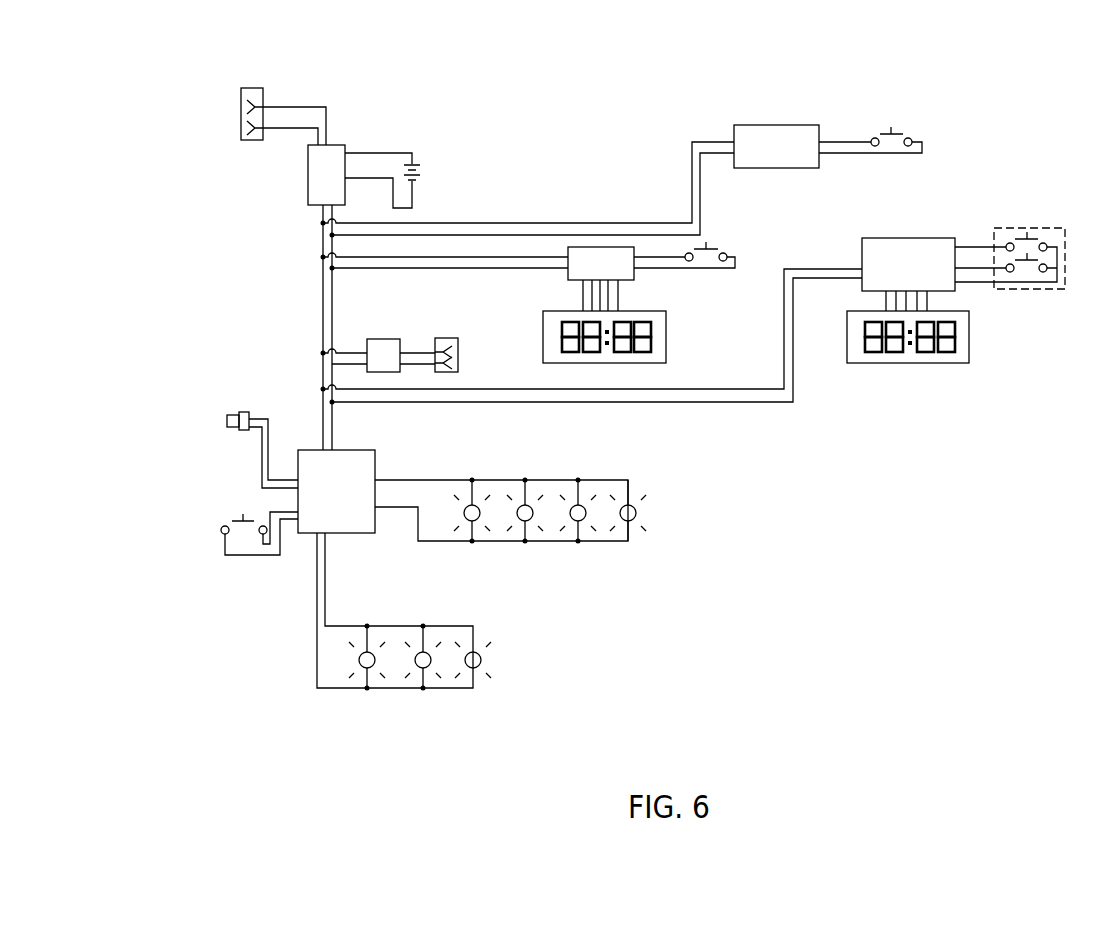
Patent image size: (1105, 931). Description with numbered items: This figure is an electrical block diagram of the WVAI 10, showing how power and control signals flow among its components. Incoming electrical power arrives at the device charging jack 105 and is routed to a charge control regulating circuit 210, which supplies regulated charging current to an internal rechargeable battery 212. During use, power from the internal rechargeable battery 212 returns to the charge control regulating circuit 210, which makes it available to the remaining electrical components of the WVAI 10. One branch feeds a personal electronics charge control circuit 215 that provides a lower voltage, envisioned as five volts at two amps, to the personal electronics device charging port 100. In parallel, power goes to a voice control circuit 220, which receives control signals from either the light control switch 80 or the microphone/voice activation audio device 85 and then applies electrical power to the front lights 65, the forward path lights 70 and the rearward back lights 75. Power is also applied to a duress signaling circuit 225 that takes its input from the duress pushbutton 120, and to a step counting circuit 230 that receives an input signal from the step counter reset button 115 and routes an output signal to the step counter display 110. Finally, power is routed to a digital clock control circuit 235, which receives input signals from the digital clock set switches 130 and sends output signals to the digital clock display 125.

The WVAI 10 is at (220, 734).
The front lights 65 is at (467, 518).
The forward path lights 70 is at (367, 653).
The rearward back lights 75 is at (428, 663).
The light control switch 80 is at (240, 512).
The microphone/voice activation audio device 85 is at (245, 412).
The personal electronics device charging port 100 is at (458, 338).
The device charging jack 105 is at (265, 90).
The step counter display 110 is at (668, 340).
The step counter reset button 115 is at (713, 243).
The duress pushbutton 120 is at (898, 128).
The digital clock display 125 is at (967, 345).
The digital clock set switches 130 is at (1018, 227).
The charge control regulating circuit 210 is at (318, 159).
The internal rechargeable battery 212 is at (425, 167).
The personal electronics charge control circuit 215 is at (393, 340).
The voice control circuit 220 is at (375, 453).
The duress signaling circuit 225 is at (783, 123).
The step counting circuit 230 is at (593, 245).
The digital clock control circuit 235 is at (915, 237).